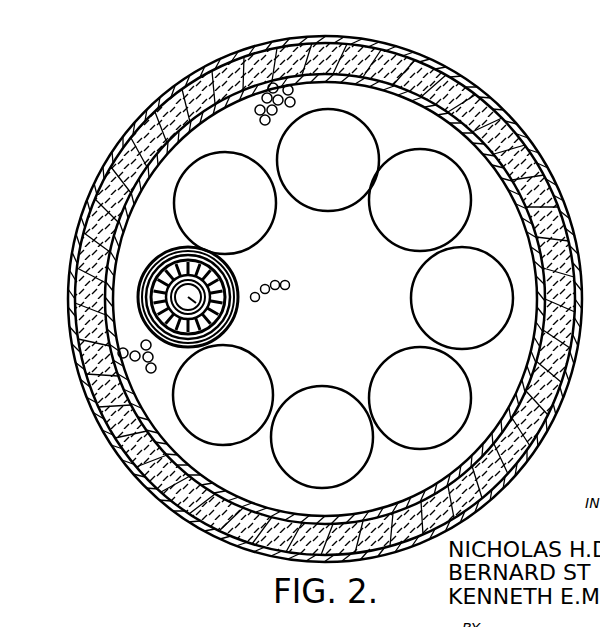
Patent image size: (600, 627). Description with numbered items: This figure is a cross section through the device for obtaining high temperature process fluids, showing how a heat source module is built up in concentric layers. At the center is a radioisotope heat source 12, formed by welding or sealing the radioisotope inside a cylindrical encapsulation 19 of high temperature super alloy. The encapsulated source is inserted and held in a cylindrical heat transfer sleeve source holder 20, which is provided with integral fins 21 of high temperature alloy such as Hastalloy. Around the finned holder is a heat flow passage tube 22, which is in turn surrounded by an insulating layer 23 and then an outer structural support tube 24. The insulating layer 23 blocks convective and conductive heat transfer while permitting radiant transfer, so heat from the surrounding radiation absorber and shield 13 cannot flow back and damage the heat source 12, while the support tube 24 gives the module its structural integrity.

The radioisotope heat source 12 is at (204, 306).
The radiation absorber and shield 13 is at (242, 123).
The cylindrical encapsulation 19 is at (186, 281).
The cylindrical heat transfer sleeve source holder 20 is at (147, 263).
The integral fins 21 is at (143, 283).
The heat flow passage tube 22 is at (147, 307).
The insulating layer 23 is at (145, 323).
The structural support tube 24 is at (227, 280).